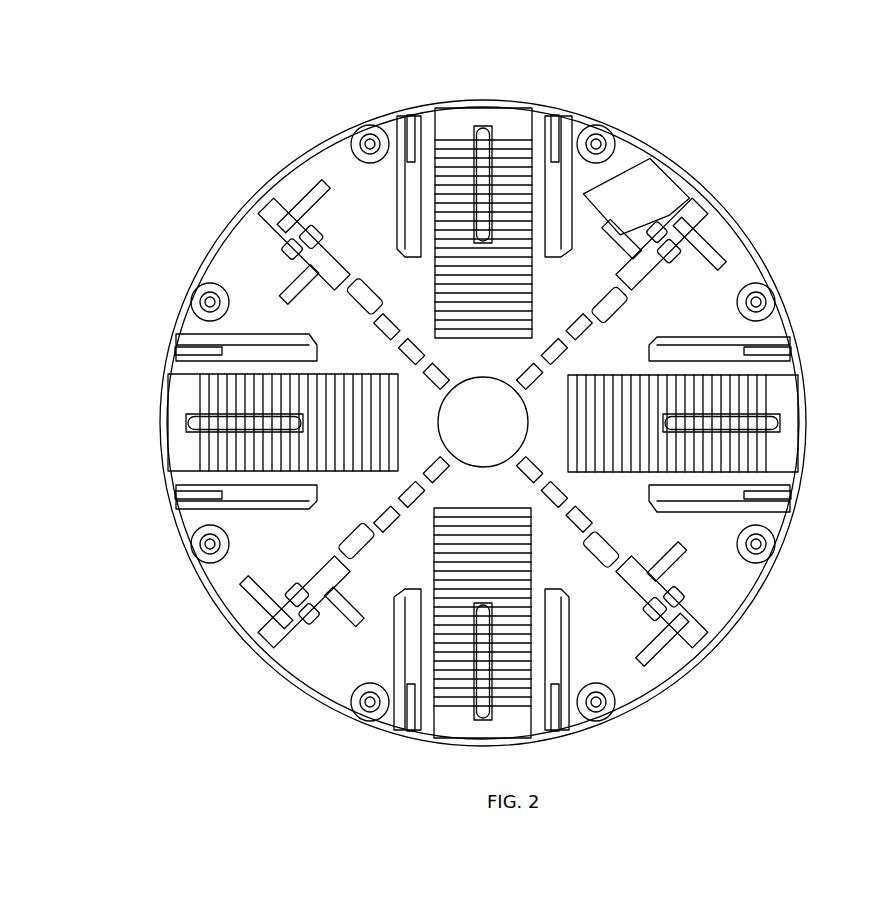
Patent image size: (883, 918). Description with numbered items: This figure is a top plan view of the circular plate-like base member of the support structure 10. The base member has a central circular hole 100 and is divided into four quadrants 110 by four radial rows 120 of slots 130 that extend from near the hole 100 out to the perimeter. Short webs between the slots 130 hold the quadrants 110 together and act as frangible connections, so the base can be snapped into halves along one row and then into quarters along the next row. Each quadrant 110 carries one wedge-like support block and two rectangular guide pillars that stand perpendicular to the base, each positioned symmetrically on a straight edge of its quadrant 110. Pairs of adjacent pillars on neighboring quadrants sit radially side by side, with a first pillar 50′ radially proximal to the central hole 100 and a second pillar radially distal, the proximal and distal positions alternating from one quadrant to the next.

The support structure 10 is at (158, 522).
The central circular hole 100 is at (498, 432).
The quadrant 110 is at (240, 262).
The radial row of slots 120 is at (358, 278).
The slot 130 is at (420, 351).
The first guide pillar 50′ is at (327, 262).